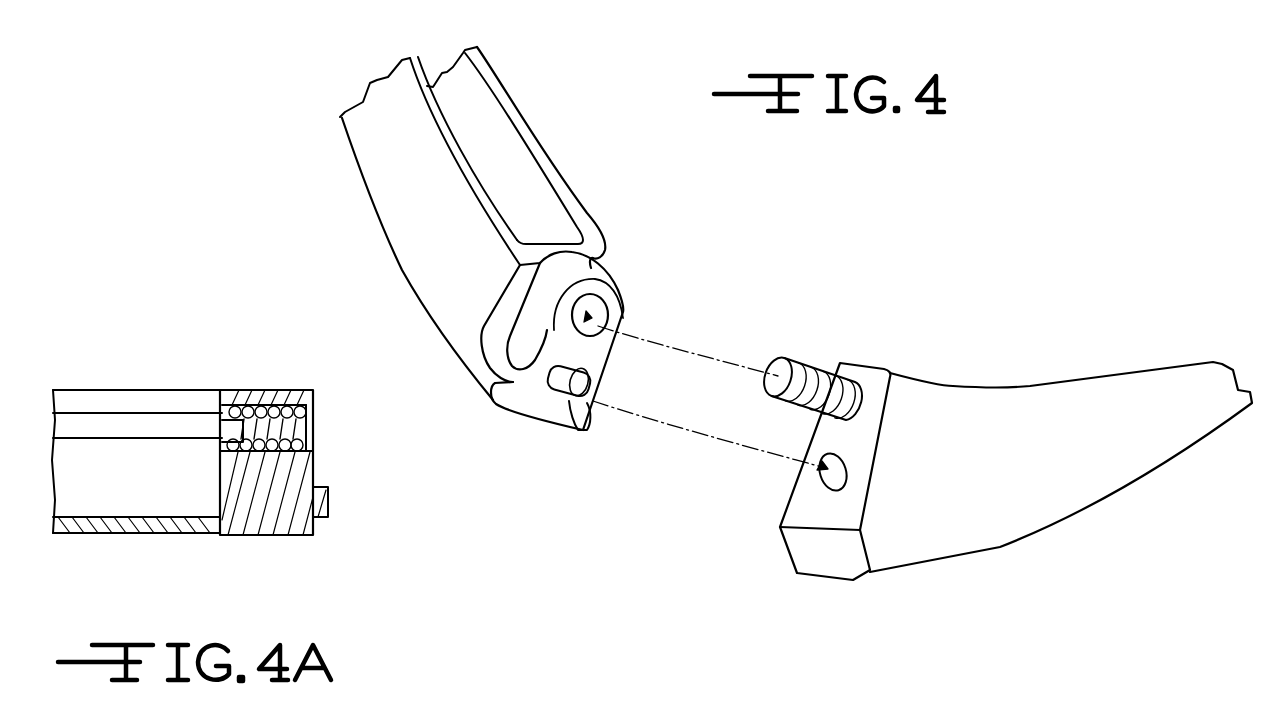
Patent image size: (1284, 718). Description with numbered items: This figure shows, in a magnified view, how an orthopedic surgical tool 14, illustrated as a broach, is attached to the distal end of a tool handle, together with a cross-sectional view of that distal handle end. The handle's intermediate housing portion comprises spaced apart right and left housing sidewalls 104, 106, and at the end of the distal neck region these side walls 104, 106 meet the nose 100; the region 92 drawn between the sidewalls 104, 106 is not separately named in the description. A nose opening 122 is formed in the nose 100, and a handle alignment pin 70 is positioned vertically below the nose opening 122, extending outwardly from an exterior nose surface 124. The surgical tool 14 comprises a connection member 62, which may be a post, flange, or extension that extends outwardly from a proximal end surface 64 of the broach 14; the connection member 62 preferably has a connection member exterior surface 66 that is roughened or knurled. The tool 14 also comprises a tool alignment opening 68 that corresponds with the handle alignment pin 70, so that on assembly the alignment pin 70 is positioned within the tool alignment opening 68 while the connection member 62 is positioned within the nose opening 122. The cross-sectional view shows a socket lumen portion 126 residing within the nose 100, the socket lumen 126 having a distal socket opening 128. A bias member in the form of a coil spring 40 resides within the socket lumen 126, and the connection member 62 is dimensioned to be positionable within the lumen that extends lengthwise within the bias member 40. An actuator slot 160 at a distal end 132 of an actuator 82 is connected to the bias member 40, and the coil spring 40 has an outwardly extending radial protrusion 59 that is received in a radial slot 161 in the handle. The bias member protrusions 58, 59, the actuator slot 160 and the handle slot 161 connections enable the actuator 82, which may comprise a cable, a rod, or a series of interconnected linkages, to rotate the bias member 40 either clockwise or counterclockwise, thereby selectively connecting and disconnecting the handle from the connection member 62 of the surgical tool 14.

In FIG. 4, the surgical tool 14 is at (1042, 495).
In FIG. 4A, the bias member 40 is at (283, 404).
In FIG. 4A, the bias member protrusion 58 is at (226, 431).
In FIG. 4A, the radial protrusion 59 is at (298, 398).
In FIG. 4, the connection member 62 is at (807, 365).
In FIG. 4, the proximal end surface 64 is at (820, 503).
In FIG. 4, the connection member exterior surface 66 is at (832, 379).
In FIG. 4, the tool alignment opening 68 is at (826, 476).
In FIG. 4, the handle alignment pin 70 is at (575, 393).
In FIG. 4A, the handle alignment pin 70 is at (328, 504).
In FIG. 4A, the actuator 82 is at (108, 423).
In FIG. 4, the groove 92 is at (522, 193).
In FIG. 4, the distal neck portion 100 is at (615, 272).
In FIG. 4, the right housing sidewall 104 is at (470, 166).
In FIG. 4, the left housing sidewall 106 is at (506, 100).
In FIG. 4, the nose opening 122 is at (607, 300).
In FIG. 4, the exterior nose surface 124 is at (545, 348).
In FIG. 4A, the socket lumen portion 126 is at (232, 397).
In FIG. 4A, the distal socket opening 128 is at (310, 431).
In FIG. 4A, the distal end of the actuator 132 is at (200, 418).
In FIG. 4A, the actuator slot 160 is at (215, 444).
In FIG. 4A, the radial slot 161 is at (313, 398).